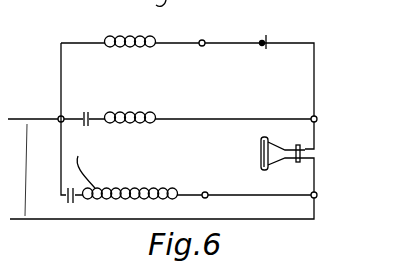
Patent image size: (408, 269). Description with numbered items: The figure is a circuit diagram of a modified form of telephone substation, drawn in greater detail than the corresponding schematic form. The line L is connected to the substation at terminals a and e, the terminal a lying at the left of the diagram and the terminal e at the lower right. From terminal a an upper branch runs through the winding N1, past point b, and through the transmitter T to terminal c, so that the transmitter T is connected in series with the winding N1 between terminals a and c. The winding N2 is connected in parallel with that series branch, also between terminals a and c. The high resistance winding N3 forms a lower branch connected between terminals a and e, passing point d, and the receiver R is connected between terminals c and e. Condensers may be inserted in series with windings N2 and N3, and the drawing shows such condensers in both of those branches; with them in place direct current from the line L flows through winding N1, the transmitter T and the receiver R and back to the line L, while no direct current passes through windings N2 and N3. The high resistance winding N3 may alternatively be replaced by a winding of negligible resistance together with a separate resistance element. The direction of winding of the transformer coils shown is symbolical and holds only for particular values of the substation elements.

The winding N1 is at (130, 32).
The winding N2 is at (130, 108).
The high resistance winding N3 is at (136, 167).
The transmitter T is at (269, 33).
The receiver R is at (283, 164).
The line L is at (23, 170).
The terminal a is at (53, 112).
The terminal b is at (200, 32).
The terminal c is at (319, 120).
The terminal d is at (207, 186).
The terminal e is at (320, 196).